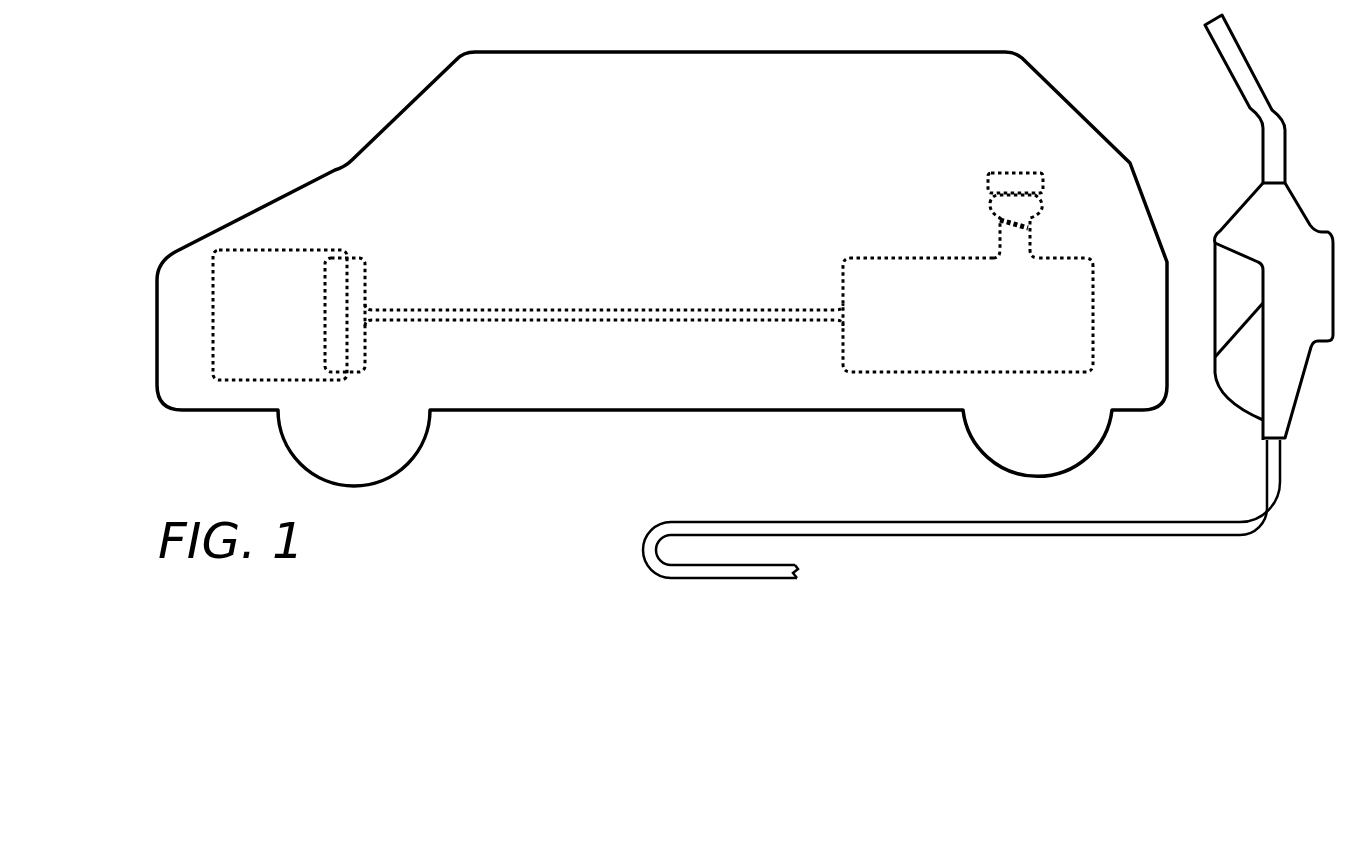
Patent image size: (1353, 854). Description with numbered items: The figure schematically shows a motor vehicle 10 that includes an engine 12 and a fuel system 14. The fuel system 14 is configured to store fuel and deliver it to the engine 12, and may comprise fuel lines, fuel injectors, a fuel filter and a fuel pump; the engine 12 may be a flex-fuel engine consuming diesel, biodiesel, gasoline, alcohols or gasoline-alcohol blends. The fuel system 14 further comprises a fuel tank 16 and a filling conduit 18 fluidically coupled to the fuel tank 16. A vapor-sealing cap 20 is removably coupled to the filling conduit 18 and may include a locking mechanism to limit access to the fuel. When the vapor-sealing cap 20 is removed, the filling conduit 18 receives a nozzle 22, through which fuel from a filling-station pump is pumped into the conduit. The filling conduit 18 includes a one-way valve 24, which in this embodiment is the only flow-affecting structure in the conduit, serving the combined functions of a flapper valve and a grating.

The motor vehicle 10 is at (678, 195).
The engine 12 is at (266, 324).
The fuel system 14 is at (561, 298).
The fuel tank 16 is at (965, 324).
The filling conduit 18 is at (967, 239).
The vapor-sealing cap 20 is at (1057, 182).
The nozzle 22 is at (1291, 307).
The one-way valve 24 is at (1010, 229).